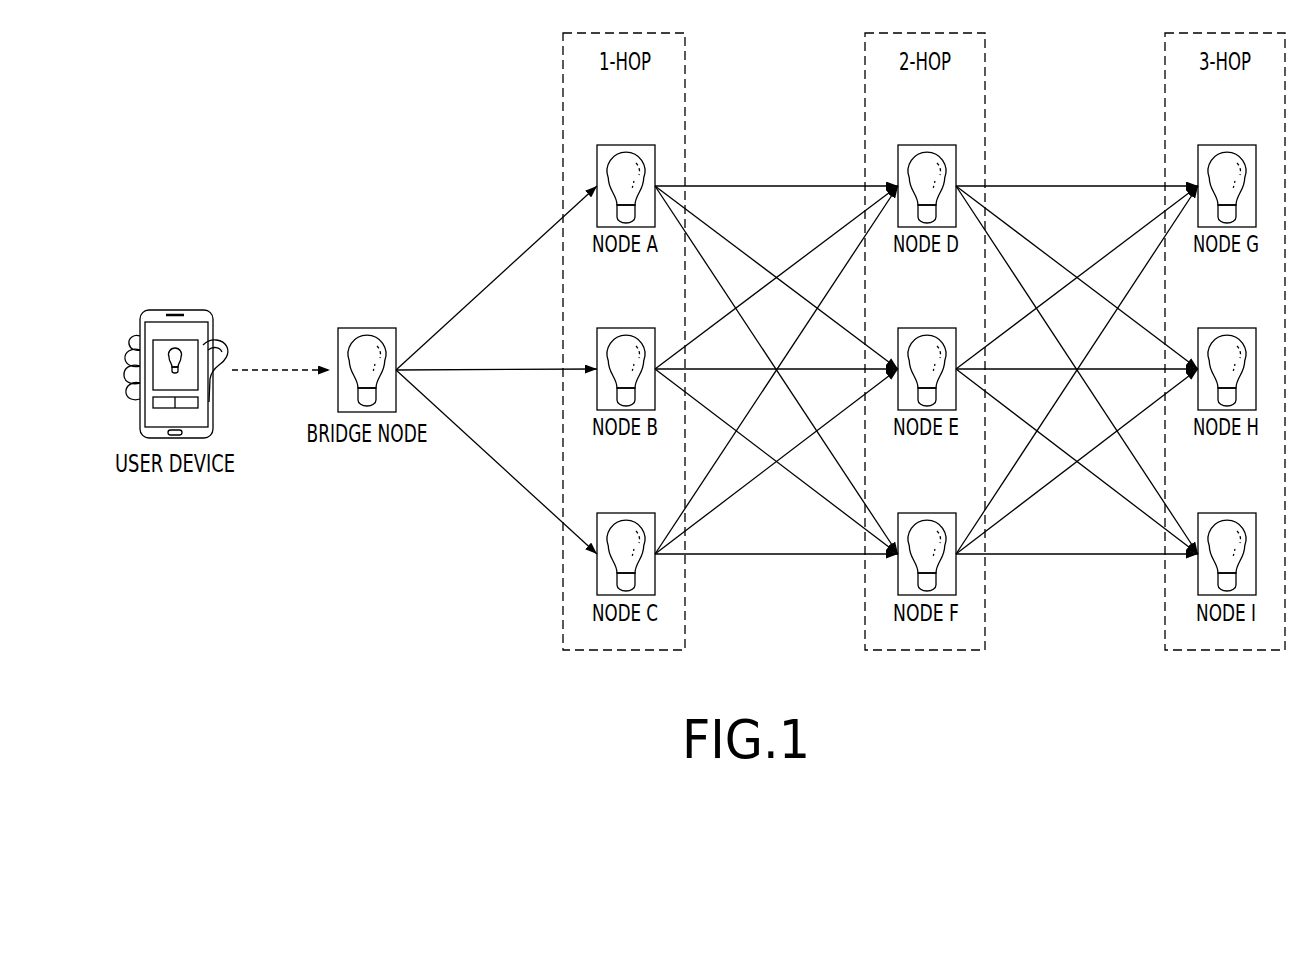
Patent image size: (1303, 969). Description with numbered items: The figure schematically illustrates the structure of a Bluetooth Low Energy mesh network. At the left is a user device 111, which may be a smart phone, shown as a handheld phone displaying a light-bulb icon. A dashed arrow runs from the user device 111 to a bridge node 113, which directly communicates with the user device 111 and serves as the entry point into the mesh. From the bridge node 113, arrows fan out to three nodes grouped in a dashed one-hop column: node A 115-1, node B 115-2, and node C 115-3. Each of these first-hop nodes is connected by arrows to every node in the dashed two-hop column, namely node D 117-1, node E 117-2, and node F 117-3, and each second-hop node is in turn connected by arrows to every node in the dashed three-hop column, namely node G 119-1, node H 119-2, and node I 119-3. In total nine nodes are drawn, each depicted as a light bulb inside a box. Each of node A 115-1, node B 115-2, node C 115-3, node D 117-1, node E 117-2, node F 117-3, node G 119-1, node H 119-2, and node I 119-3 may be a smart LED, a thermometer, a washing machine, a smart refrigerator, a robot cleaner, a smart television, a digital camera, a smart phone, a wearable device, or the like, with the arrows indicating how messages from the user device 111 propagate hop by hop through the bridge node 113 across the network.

The user device 111 is at (175, 309).
The bridge node 113 is at (367, 327).
The node A 115-1 is at (626, 143).
The node B 115-2 is at (626, 326).
The node C 115-3 is at (626, 511).
The node D 117-1 is at (927, 143).
The node E 117-2 is at (927, 326).
The node F 117-3 is at (927, 511).
The node G 119-1 is at (1227, 143).
The node H 119-2 is at (1227, 326).
The node I 119-3 is at (1227, 511).